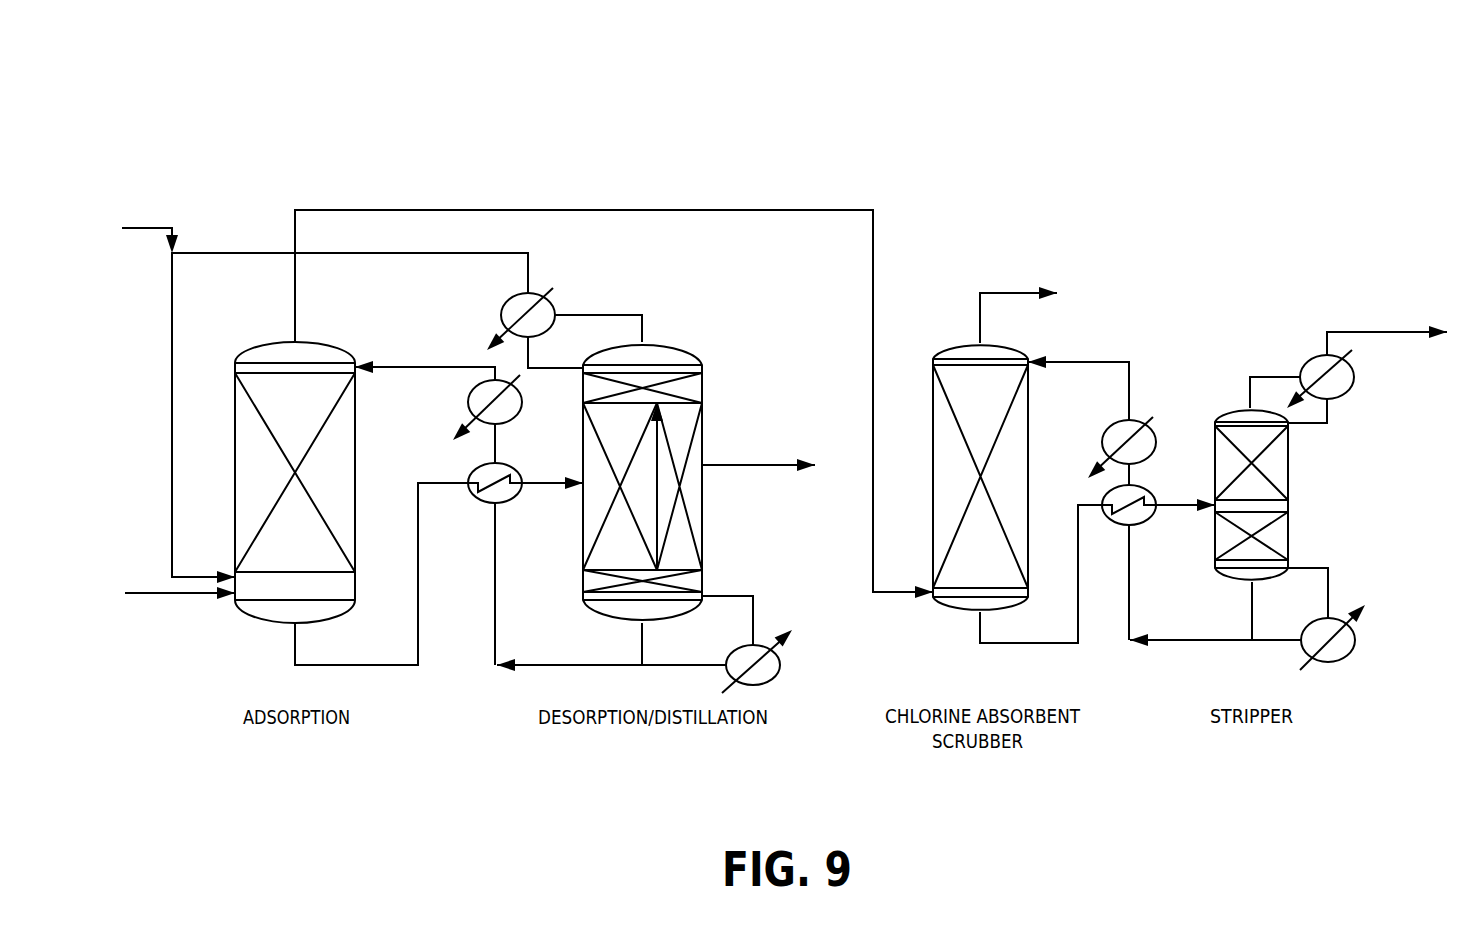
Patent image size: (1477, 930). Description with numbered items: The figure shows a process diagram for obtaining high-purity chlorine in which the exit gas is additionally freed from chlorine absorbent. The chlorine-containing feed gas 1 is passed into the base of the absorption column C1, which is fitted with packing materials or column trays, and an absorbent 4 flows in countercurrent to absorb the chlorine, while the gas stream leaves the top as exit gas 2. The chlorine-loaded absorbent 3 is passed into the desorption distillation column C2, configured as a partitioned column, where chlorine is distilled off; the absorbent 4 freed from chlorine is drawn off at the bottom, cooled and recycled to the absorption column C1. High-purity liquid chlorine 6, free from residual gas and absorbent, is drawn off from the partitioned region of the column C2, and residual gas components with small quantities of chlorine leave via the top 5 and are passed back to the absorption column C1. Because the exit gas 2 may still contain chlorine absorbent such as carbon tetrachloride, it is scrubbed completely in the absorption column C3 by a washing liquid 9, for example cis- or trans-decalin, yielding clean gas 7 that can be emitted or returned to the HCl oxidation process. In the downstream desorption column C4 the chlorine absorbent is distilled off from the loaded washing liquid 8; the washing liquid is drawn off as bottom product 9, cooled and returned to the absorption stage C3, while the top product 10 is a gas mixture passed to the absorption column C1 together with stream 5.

The feed gas 1 is at (180, 624).
The exit gas 2 is at (614, 403).
The chlorine-loaded absorbent 3 is at (381, 574).
The absorbent 4 is at (611, 647).
The top stream of desorption distillation column 5 is at (350, 418).
The liquid chlorine 6 is at (758, 471).
The clean gas 7 is at (993, 302).
The loaded washing liquid 8 is at (1041, 588).
The washing liquid 9 is at (1215, 627).
The top product 10 is at (787, 283).
The absorption column C1 is at (312, 482).
The desorption distillation column C2 is at (657, 482).
The absorption column C3 is at (997, 477).
The desorption column C4 is at (1267, 494).